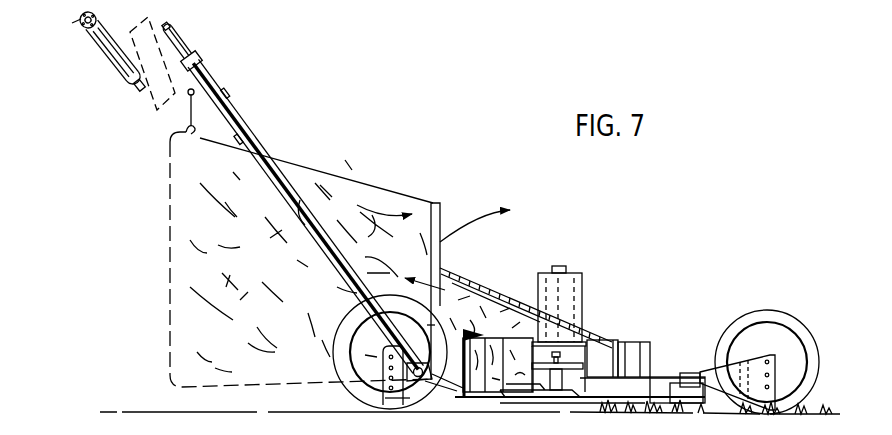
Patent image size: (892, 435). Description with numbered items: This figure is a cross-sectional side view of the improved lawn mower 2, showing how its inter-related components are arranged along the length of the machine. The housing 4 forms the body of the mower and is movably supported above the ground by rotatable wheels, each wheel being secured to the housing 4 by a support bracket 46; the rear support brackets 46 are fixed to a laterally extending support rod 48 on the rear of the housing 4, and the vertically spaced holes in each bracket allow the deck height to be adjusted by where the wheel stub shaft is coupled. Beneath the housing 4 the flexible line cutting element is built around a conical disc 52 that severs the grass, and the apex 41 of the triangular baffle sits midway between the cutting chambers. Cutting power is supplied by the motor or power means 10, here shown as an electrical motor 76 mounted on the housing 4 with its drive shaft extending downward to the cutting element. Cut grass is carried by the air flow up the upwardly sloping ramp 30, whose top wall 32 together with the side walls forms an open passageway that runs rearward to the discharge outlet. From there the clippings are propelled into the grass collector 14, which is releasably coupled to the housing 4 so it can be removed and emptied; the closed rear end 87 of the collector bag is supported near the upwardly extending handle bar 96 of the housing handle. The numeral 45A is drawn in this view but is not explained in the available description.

The lawn mower 2 is at (515, 248).
The housing 4 is at (678, 366).
The motor or power means 10 is at (630, 311).
The grass collector 14 is at (336, 200).
The ramp 30 is at (476, 276).
The top wall 32 is at (509, 311).
The apex of baffle 41 is at (612, 345).
The axle 45A is at (732, 429).
The support bracket 46 is at (703, 375).
The support rod 48 is at (460, 398).
The conical disc 52 is at (577, 402).
The electrical motor 76 is at (582, 286).
The closed rear end of bag 87 is at (170, 212).
The handle bar 96 is at (338, 265).